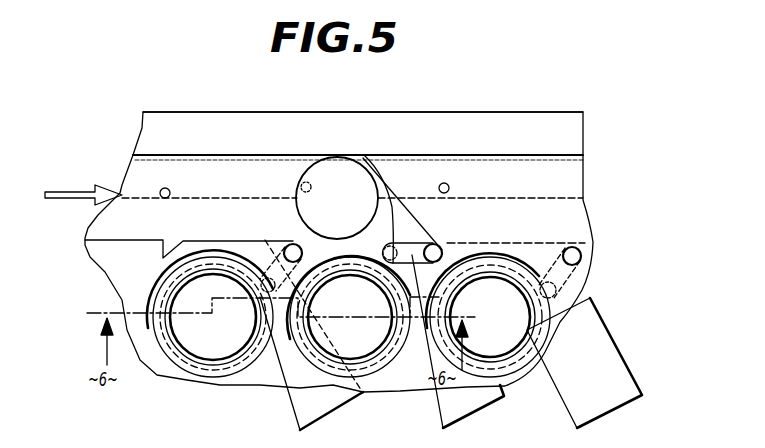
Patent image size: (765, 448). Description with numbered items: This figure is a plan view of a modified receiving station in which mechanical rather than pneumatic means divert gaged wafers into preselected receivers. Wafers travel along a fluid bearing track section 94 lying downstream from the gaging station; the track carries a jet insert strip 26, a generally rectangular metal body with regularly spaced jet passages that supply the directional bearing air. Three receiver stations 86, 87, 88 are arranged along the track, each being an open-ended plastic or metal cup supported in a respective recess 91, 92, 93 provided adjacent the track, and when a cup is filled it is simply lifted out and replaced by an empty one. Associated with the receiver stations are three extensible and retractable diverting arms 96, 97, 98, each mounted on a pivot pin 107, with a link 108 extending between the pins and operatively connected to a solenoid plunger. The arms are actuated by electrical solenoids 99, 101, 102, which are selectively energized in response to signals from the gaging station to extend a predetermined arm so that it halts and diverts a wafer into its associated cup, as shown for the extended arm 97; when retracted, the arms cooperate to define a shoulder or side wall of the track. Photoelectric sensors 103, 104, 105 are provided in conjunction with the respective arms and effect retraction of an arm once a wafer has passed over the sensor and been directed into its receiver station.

The jet insert strip 26 is at (557, 200).
The receiver station 86 is at (205, 360).
The receiver station 87 is at (377, 358).
The receiver station 88 is at (513, 362).
The recess 91 is at (166, 350).
The recess 92 is at (316, 364).
The recess 93 is at (437, 342).
The fluid bearing track section 94 is at (253, 127).
The extensible and retractable arm 96 is at (208, 246).
The extensible and retractable arm 97 is at (383, 186).
The extensible and retractable arm 98 is at (543, 250).
The electrical solenoid 99 is at (287, 393).
The electrical solenoid 101 is at (473, 402).
The electrical solenoid 102 is at (619, 368).
The photoelectric sensor 103 is at (165, 188).
The photoelectric sensor 104 is at (322, 157).
The photoelectric sensor 105 is at (449, 186).
The pivot pin 107 is at (300, 260).
The link 108 is at (598, 281).